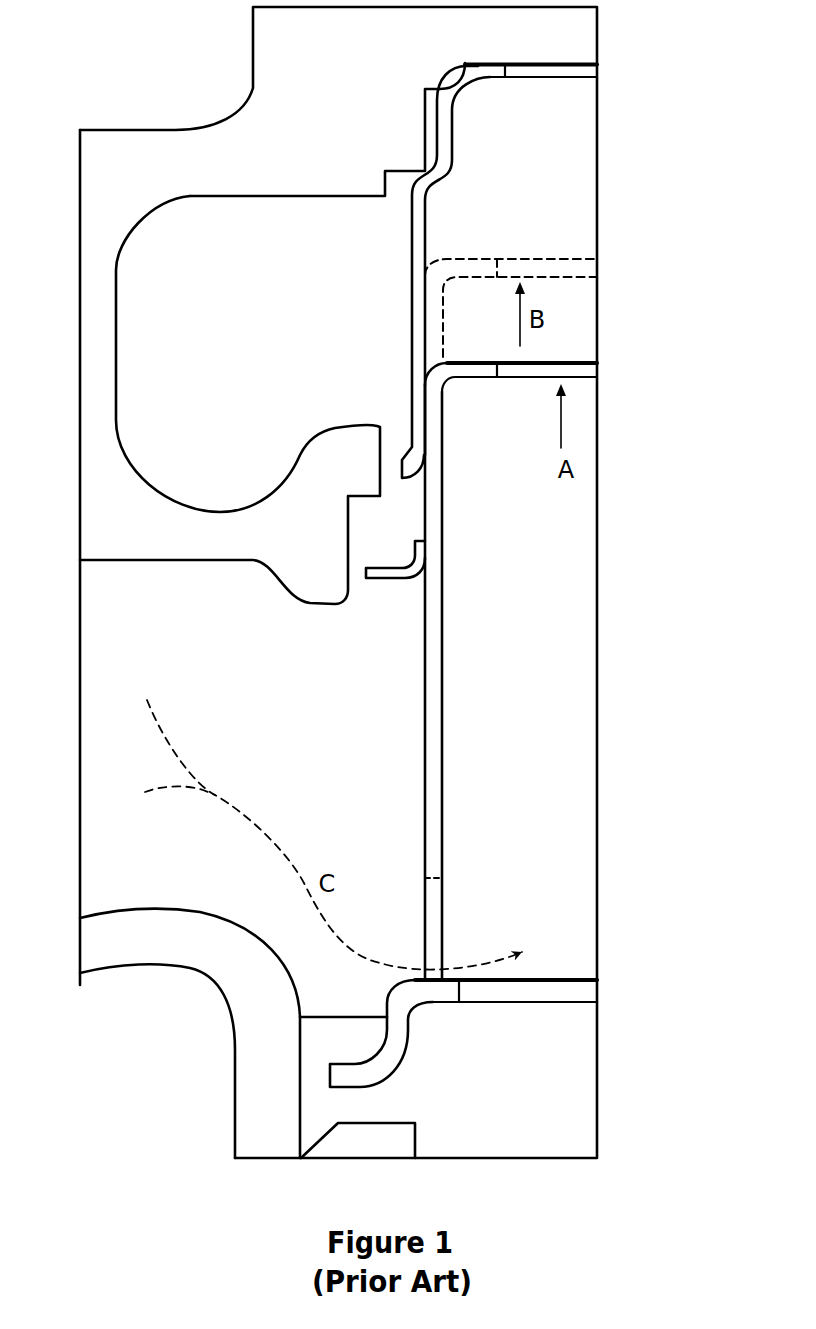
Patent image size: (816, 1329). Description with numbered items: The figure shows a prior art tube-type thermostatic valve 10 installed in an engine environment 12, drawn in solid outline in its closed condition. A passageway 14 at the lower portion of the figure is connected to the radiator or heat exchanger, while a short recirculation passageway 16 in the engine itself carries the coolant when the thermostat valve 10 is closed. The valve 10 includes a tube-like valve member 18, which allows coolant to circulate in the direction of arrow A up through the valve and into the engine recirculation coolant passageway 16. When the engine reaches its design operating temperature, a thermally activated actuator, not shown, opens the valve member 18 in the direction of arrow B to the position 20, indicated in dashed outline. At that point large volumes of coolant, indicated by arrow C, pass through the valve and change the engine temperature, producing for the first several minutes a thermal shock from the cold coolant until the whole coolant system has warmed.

The thermostatic valve 10 is at (632, 443).
The engine environment 12 is at (632, 125).
The passageway 14 is at (237, 867).
The recirculation passageway 16 is at (240, 287).
The tube-like valve member 18 is at (433, 603).
The open position 20 is at (510, 258).